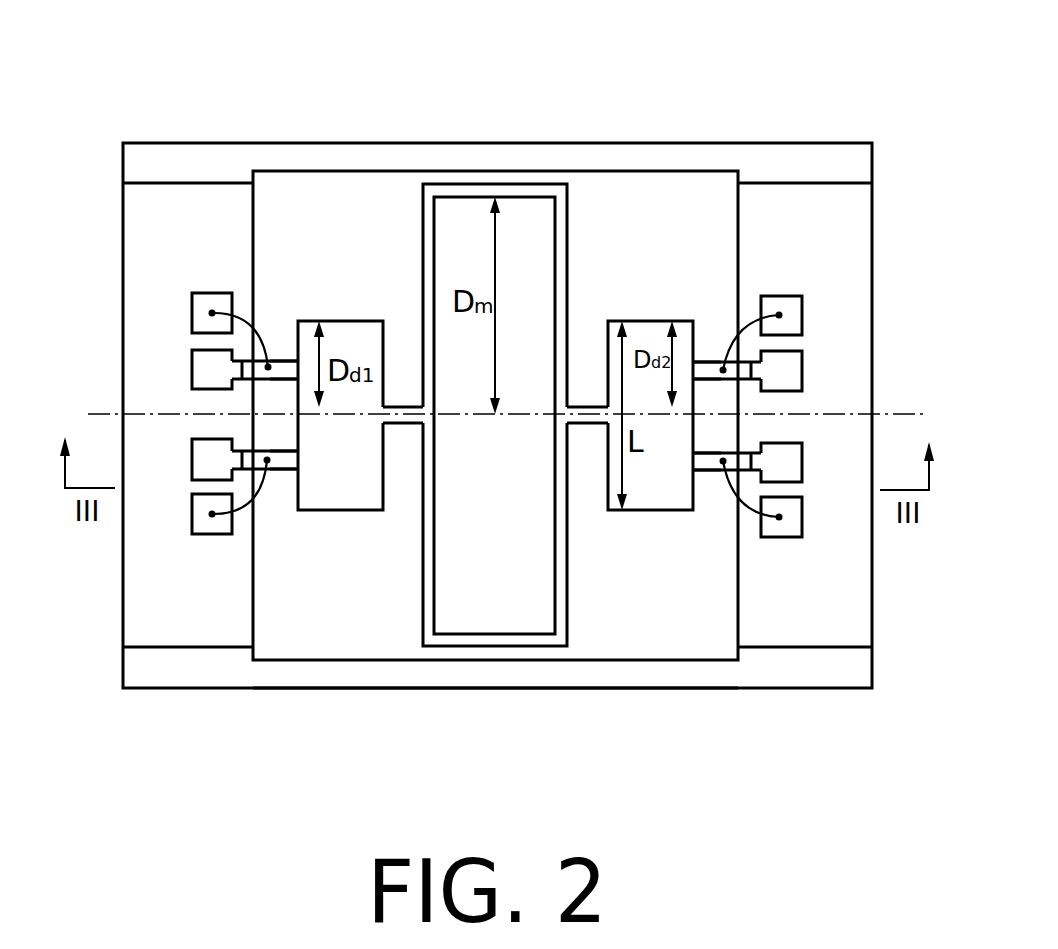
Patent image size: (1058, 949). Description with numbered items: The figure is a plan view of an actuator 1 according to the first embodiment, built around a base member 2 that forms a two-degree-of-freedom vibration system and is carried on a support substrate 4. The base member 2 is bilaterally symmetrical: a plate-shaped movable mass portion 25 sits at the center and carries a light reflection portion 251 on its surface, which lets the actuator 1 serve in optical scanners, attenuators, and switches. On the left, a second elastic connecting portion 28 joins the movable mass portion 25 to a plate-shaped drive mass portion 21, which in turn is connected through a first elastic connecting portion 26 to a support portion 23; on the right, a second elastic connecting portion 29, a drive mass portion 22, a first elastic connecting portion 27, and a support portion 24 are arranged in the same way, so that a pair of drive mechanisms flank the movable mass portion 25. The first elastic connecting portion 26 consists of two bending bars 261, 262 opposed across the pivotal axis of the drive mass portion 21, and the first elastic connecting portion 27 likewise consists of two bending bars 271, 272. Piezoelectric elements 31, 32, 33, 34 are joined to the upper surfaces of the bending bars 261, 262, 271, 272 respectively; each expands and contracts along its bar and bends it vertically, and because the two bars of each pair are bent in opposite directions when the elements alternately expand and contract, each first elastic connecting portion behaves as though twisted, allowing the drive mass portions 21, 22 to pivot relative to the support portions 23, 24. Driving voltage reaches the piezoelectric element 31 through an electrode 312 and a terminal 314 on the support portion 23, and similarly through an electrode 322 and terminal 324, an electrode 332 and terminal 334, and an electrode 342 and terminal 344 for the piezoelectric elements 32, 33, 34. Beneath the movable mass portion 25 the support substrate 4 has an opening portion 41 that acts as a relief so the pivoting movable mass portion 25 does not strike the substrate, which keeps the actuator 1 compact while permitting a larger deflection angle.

The actuator 1 is at (782, 80).
The base member 2 is at (885, 284).
The support substrate 4 is at (277, 670).
The drive mass portion 21 is at (340, 483).
The drive mass portion 22 is at (645, 492).
The support portion 23 is at (193, 623).
The support portion 24 is at (808, 630).
The movable mass portion 25 is at (450, 640).
The first elastic connecting portion 26 is at (373, 264).
The first elastic connecting portion 27 is at (735, 264).
The second elastic connecting portion 28 is at (399, 406).
The second elastic connecting portion 29 is at (582, 406).
The piezoelectric element 31 is at (282, 470).
The piezoelectric element 32 is at (252, 374).
The piezoelectric element 33 is at (712, 463).
The piezoelectric element 34 is at (700, 380).
The opening portion 41 is at (327, 642).
The light reflection portion 251 is at (495, 620).
The bending bar 261 is at (288, 364).
The bending bar 262 is at (285, 450).
The bending bar 271 is at (730, 452).
The bending bar 272 is at (705, 362).
The electrode 312 is at (202, 463).
The terminal 314 is at (200, 522).
The electrode 322 is at (203, 369).
The terminal 324 is at (205, 311).
The electrode 332 is at (788, 465).
The terminal 334 is at (792, 525).
The electrode 342 is at (790, 370).
The terminal 344 is at (790, 312).